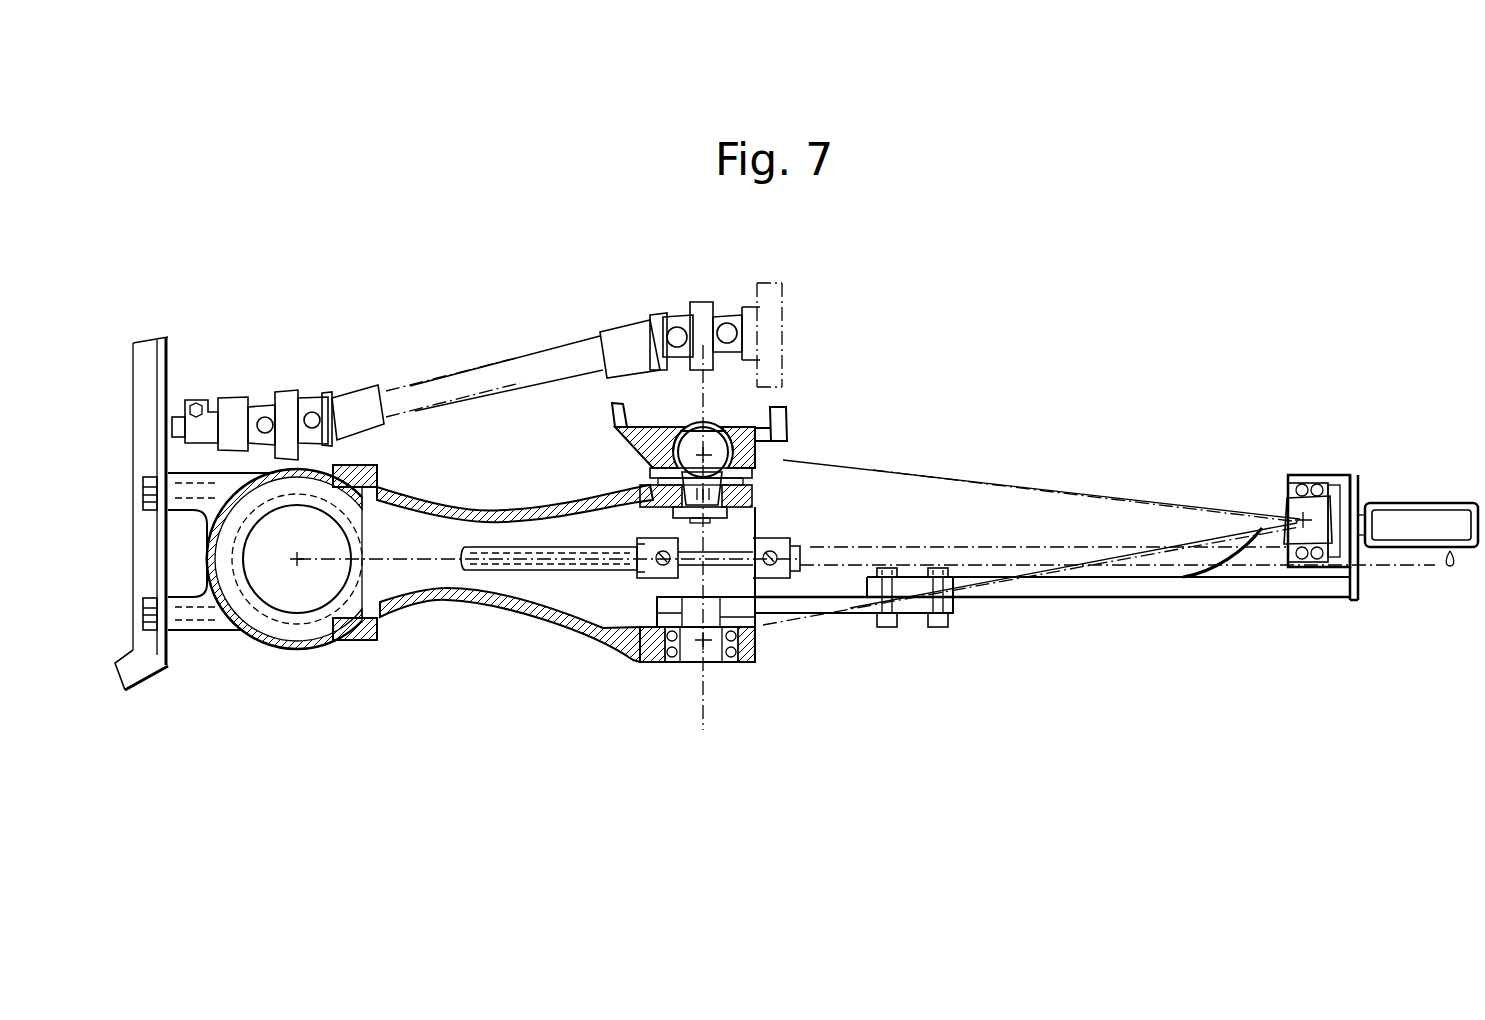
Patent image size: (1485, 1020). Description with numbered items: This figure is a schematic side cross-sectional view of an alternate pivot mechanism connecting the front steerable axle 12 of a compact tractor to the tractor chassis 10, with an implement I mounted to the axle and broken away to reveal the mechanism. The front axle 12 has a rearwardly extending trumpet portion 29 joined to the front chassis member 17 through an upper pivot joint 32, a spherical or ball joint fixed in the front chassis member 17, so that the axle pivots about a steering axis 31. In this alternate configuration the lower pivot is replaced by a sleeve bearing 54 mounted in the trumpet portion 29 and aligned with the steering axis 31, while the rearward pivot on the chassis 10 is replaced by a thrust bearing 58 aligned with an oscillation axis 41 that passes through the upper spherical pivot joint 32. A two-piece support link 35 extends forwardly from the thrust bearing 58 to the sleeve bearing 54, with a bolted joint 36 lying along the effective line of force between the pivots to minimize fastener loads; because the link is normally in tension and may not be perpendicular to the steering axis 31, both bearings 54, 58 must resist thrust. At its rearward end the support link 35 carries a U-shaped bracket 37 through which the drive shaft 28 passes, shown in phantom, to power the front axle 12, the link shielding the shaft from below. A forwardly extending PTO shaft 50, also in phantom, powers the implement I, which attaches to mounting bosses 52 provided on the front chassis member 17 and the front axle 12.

The implement I is at (168, 363).
The tractor chassis 10 is at (1420, 505).
The front steerable axle 12 is at (323, 633).
The front chassis member 17 is at (645, 447).
The drive shaft 28 is at (930, 548).
The trumpet portion 29 is at (476, 605).
The steering axis 31 is at (700, 689).
The upper pivot joint 32 is at (723, 422).
The support link 35 is at (1106, 595).
The bolted joint 36 is at (955, 603).
The U-shaped bracket 37 is at (1225, 572).
The oscillation axis 41 is at (843, 470).
The power-takeoff (PTO) shaft 50 is at (280, 395).
The mounting bosses 52 is at (205, 628).
The sleeve bearing 54 is at (707, 655).
The thrust bearing 58 is at (1290, 498).